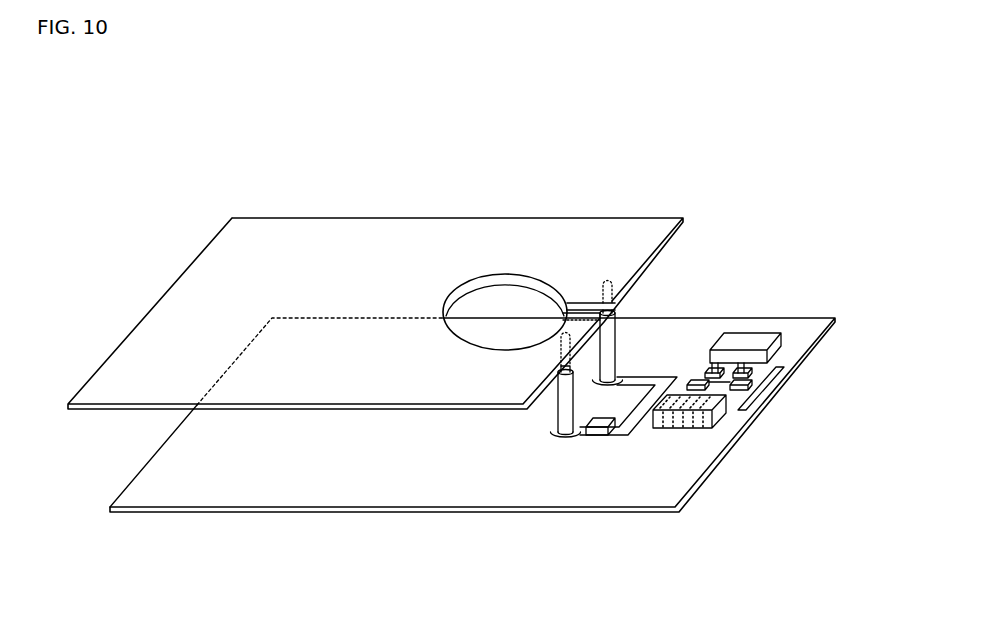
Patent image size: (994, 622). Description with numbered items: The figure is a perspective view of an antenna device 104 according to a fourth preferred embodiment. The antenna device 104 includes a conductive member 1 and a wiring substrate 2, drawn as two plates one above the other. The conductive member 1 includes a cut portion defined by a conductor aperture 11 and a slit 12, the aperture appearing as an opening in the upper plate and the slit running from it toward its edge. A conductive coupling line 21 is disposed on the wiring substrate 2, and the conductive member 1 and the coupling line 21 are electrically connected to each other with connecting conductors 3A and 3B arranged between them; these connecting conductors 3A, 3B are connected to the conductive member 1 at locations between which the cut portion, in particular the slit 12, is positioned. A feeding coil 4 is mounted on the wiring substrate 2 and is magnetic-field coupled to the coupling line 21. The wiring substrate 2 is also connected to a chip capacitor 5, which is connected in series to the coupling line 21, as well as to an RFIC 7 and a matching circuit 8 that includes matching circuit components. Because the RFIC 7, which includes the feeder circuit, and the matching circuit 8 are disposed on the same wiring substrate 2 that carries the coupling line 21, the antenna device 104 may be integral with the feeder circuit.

The antenna device 104 is at (779, 131).
The conductive member 1 is at (210, 262).
The wiring substrate 2 is at (800, 332).
The conductor aperture 11 is at (514, 300).
The slit 12 is at (583, 309).
The connecting conductor 3A is at (562, 405).
The connecting conductor 3B is at (612, 332).
The coupling line 21 is at (642, 380).
The chip capacitor 5 is at (598, 432).
The RFIC 7 is at (745, 342).
The matching circuit 8 is at (773, 367).
The feeding coil 4 is at (724, 420).